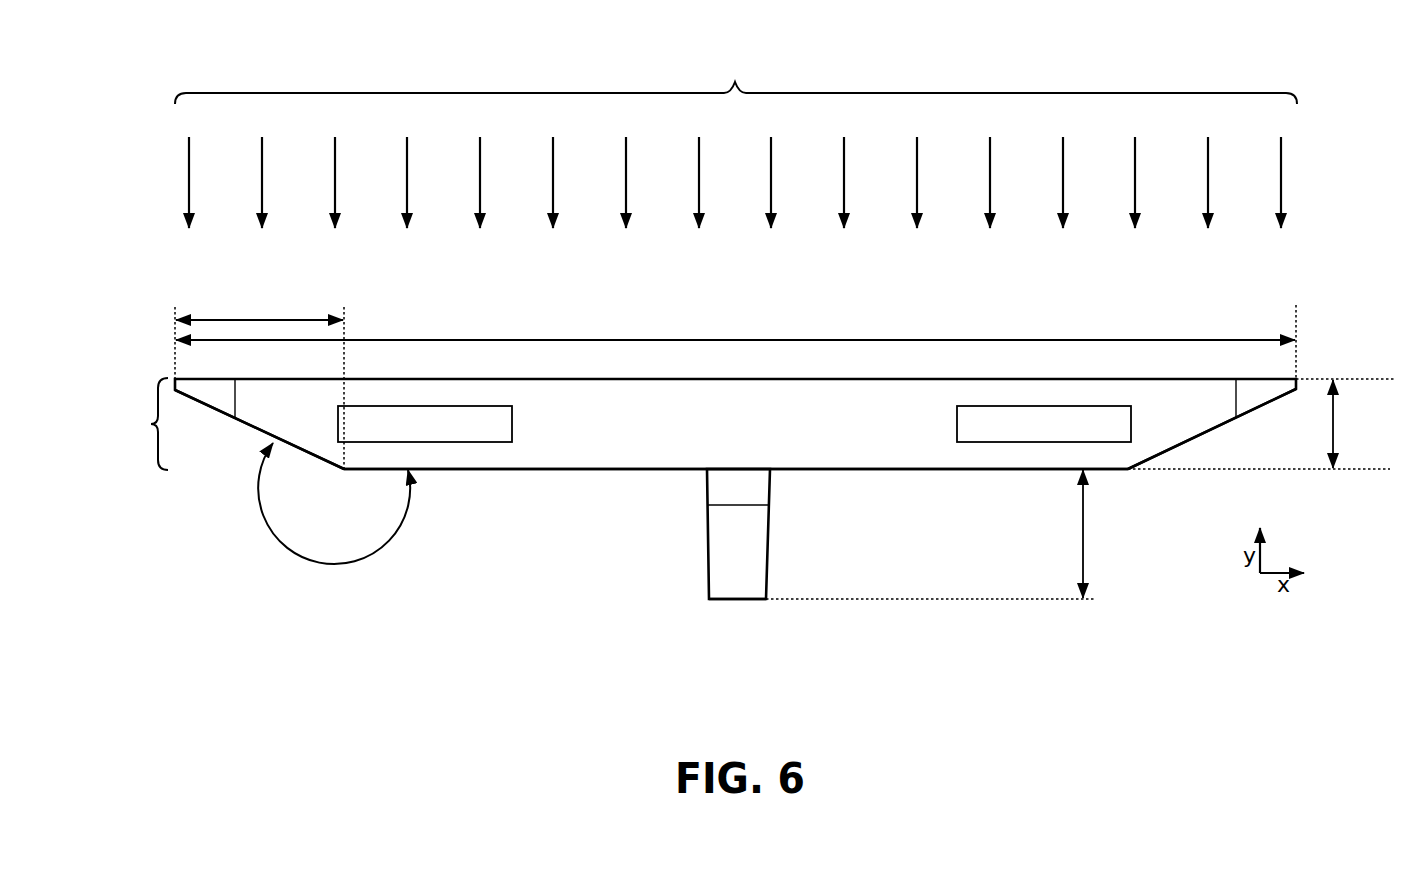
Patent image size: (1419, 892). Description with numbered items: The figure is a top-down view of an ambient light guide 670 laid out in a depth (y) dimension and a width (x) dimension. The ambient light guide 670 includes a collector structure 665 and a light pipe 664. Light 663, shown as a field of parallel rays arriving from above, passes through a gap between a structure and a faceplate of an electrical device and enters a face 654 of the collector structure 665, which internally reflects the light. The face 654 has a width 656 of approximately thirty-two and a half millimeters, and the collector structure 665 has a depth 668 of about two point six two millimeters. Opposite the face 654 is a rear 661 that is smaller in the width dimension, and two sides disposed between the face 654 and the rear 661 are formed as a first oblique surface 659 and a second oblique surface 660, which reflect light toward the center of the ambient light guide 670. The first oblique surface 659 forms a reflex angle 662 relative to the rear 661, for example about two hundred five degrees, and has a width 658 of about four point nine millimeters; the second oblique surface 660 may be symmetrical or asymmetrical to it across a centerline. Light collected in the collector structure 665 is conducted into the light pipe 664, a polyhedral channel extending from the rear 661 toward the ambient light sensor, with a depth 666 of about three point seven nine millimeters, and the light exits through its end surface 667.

The face 654 is at (557, 379).
The width 656 is at (595, 339).
The width 658 is at (330, 318).
The first oblique surface 659 is at (245, 421).
The second oblique surface 660 is at (1228, 424).
The rear 661 is at (560, 471).
The angle 662 is at (328, 566).
The light 663 is at (736, 78).
The light pipe 664 is at (707, 532).
The collector structure 665 is at (135, 424).
The depth 666 is at (1084, 532).
The end surface 667 is at (735, 601).
The depth 668 is at (1334, 424).
The ambient light guide 670 is at (133, 170).